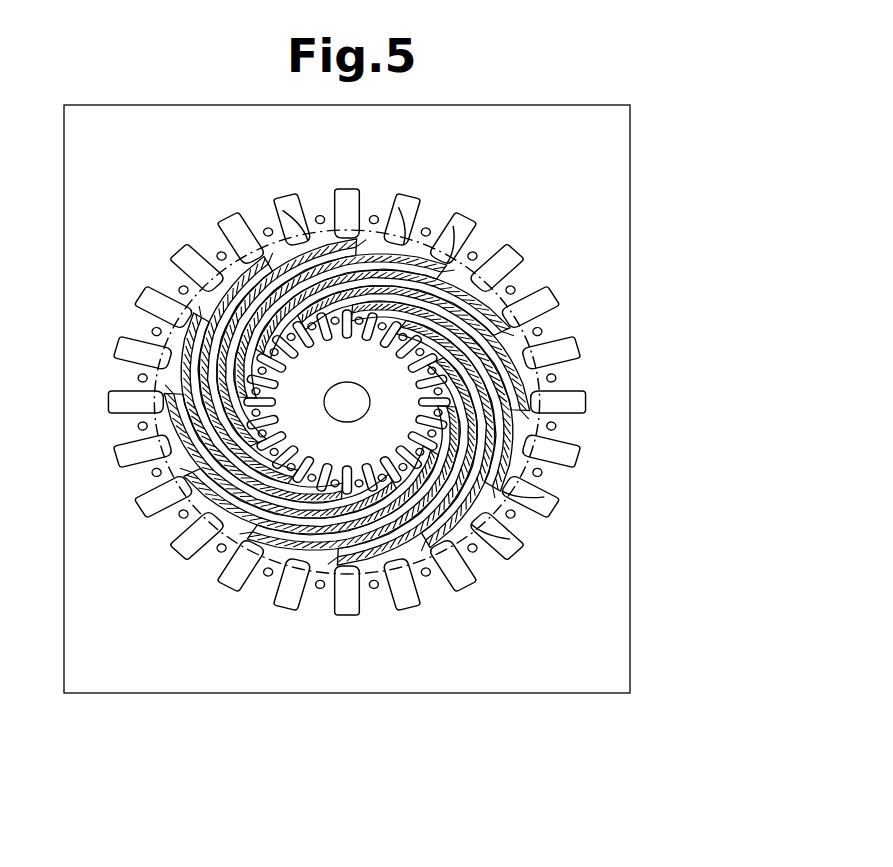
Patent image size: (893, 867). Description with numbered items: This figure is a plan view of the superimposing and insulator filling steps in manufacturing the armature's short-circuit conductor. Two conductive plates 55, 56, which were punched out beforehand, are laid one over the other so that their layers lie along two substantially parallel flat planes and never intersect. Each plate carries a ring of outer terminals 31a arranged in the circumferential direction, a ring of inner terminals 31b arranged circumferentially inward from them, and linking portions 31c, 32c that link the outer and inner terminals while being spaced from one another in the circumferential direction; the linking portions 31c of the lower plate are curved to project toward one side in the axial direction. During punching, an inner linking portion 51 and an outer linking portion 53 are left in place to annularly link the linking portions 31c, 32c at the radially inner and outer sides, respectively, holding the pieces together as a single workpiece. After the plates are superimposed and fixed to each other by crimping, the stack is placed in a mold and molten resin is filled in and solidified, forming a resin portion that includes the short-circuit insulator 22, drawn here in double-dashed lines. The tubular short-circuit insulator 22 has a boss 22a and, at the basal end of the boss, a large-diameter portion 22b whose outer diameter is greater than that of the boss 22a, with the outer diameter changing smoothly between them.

The conductive plate 55 is at (403, 399).
The conductive plate 56 is at (630, 149).
The outer linking portion 53 is at (585, 198).
The short-circuit insulator 22 is at (401, 402).
The boss 22a is at (590, 420).
The large-diameter portion 22b is at (538, 381).
The outer terminal 31a is at (458, 250).
The inner terminal 31b is at (312, 330).
The linking portion 31c is at (312, 238).
The linking portion 32c is at (410, 232).
The inner linking portion 51 is at (365, 458).